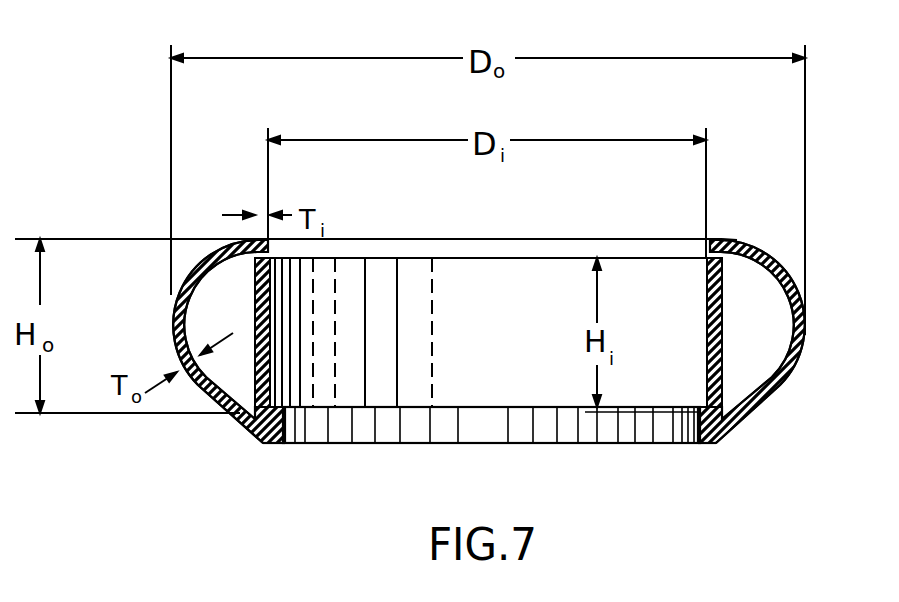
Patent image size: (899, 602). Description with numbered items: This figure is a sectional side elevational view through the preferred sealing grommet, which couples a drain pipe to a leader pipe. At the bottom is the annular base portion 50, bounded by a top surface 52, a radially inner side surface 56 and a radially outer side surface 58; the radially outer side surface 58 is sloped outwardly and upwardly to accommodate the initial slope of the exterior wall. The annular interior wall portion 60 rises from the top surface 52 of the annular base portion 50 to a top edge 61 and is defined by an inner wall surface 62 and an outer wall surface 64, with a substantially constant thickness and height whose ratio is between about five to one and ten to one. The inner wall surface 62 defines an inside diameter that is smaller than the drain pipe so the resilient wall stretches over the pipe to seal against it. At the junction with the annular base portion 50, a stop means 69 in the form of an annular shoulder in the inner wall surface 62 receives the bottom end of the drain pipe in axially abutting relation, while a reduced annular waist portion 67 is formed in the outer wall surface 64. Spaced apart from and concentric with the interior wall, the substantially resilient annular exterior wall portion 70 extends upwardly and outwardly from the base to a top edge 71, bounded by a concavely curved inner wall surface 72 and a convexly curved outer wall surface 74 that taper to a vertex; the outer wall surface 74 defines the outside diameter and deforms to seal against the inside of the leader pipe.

The annular base portion 50 is at (273, 446).
The top surface 52 is at (285, 390).
The radially inner side surface 56 is at (293, 442).
The radially outer side surface 58 is at (257, 427).
The annular interior wall portion 60 is at (280, 368).
The top edge 61 is at (262, 245).
The inner wall surface 62 is at (276, 317).
The outer wall surface 64 is at (255, 320).
The reduced annular waist portion 67 is at (208, 400).
The stop means 69 is at (287, 407).
The annular exterior wall portion 70 is at (783, 267).
The top edge 71 is at (240, 238).
The inner wall surface 72 is at (195, 292).
The outer wall surface 74 is at (172, 330).